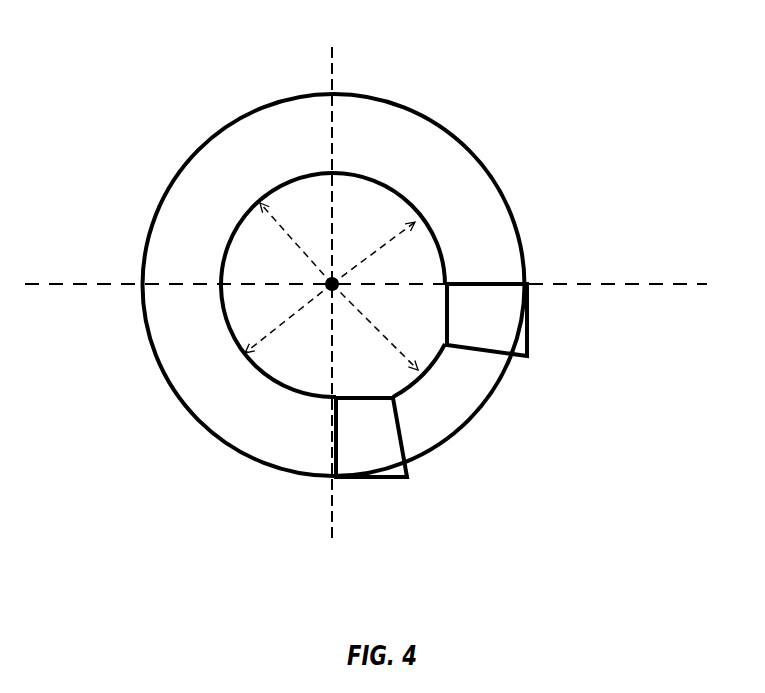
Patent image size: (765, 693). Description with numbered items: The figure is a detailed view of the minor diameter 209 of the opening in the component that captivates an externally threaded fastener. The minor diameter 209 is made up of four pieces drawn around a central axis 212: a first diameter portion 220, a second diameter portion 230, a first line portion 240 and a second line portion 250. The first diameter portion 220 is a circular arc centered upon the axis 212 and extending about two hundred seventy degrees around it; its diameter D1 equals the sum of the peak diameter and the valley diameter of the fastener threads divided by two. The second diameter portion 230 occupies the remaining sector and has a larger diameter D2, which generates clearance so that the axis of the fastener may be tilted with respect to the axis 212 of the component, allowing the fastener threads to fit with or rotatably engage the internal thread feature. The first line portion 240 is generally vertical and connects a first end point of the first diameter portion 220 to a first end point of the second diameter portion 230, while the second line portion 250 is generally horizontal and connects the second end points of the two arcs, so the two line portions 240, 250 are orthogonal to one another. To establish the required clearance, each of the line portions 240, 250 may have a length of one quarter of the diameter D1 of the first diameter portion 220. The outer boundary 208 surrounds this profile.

The outer wall of annular body 208 is at (500, 191).
The minor diameter 209 is at (392, 188).
The axis 212 is at (332, 284).
The first diameter portion 220 is at (349, 266).
The second diameter portion 230 is at (435, 362).
The first line portion 240 is at (449, 313).
The second line portion 250 is at (357, 399).
The diameter of first diameter portion D1 is at (270, 336).
The diameter of second diameter portion D2 is at (276, 214).